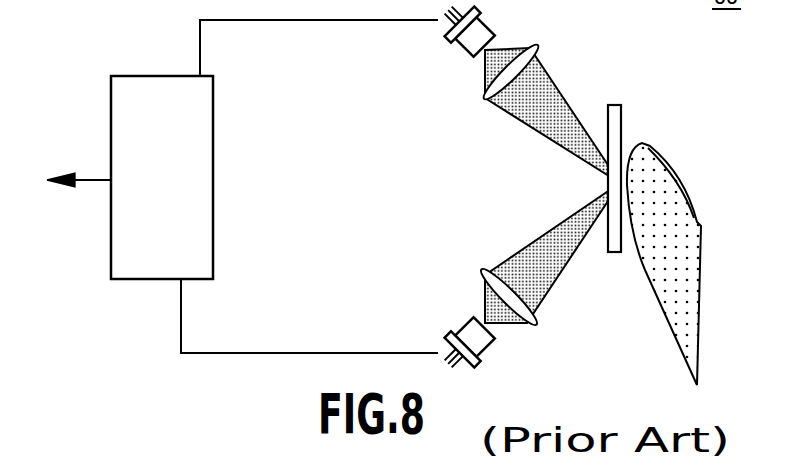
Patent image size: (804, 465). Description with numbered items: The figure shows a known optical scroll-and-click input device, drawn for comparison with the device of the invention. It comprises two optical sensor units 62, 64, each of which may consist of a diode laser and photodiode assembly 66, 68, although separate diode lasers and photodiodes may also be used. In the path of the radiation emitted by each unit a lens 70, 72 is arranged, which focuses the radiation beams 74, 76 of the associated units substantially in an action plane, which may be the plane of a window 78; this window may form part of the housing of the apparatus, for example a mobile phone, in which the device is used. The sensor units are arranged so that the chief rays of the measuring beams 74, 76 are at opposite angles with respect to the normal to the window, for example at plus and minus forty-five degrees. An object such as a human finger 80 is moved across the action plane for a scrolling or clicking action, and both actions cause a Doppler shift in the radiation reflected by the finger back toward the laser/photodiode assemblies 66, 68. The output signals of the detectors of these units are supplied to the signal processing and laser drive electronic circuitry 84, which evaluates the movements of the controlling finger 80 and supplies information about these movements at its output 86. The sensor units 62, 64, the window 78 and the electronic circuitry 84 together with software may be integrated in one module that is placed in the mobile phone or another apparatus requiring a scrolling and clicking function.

The optical sensor unit 62 is at (487, 135).
The optical sensor unit 64 is at (484, 231).
The diode laser and photodiode assembly 66 is at (478, 30).
The diode laser and photodiode assembly 68 is at (471, 335).
The lens 70 is at (485, 94).
The lens 72 is at (486, 283).
The radiation beam 74 is at (552, 84).
The radiation beam 76 is at (560, 280).
The window 78 is at (622, 118).
The human finger 80 is at (677, 292).
The electronic circuitry 84 is at (135, 281).
The output 86 is at (80, 182).